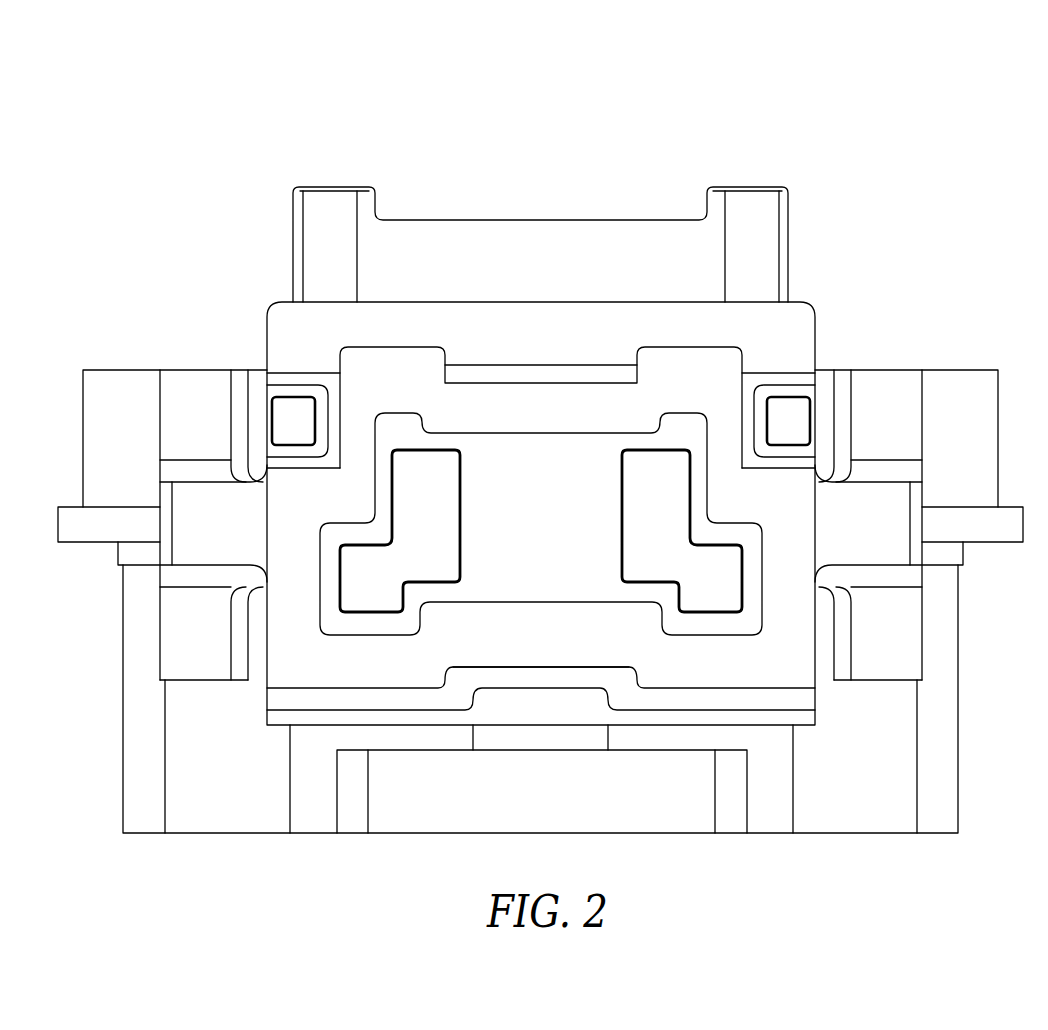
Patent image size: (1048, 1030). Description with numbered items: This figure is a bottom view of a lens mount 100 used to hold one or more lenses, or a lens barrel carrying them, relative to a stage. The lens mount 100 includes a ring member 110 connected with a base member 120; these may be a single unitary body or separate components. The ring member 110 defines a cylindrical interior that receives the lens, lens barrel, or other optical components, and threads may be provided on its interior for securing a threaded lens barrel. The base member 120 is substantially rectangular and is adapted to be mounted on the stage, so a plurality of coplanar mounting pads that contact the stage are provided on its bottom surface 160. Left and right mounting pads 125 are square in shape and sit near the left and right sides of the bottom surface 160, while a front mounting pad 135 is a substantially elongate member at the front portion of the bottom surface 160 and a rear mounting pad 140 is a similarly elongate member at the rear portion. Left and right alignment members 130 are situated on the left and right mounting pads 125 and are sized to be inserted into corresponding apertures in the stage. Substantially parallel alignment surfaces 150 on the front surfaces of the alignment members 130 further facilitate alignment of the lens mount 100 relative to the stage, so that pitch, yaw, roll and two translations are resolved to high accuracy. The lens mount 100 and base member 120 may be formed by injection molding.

The lens mount 100 is at (484, 113).
The ring member 110 is at (960, 370).
The base member 120 is at (273, 298).
The left and right mounting pads 125 is at (296, 378).
The left and right alignment members 130 is at (282, 413).
The front mounting pad 135 is at (570, 370).
The rear mounting pad 140 is at (545, 677).
The alignment surfaces 150 is at (283, 392).
The bottom surface 160 is at (533, 452).